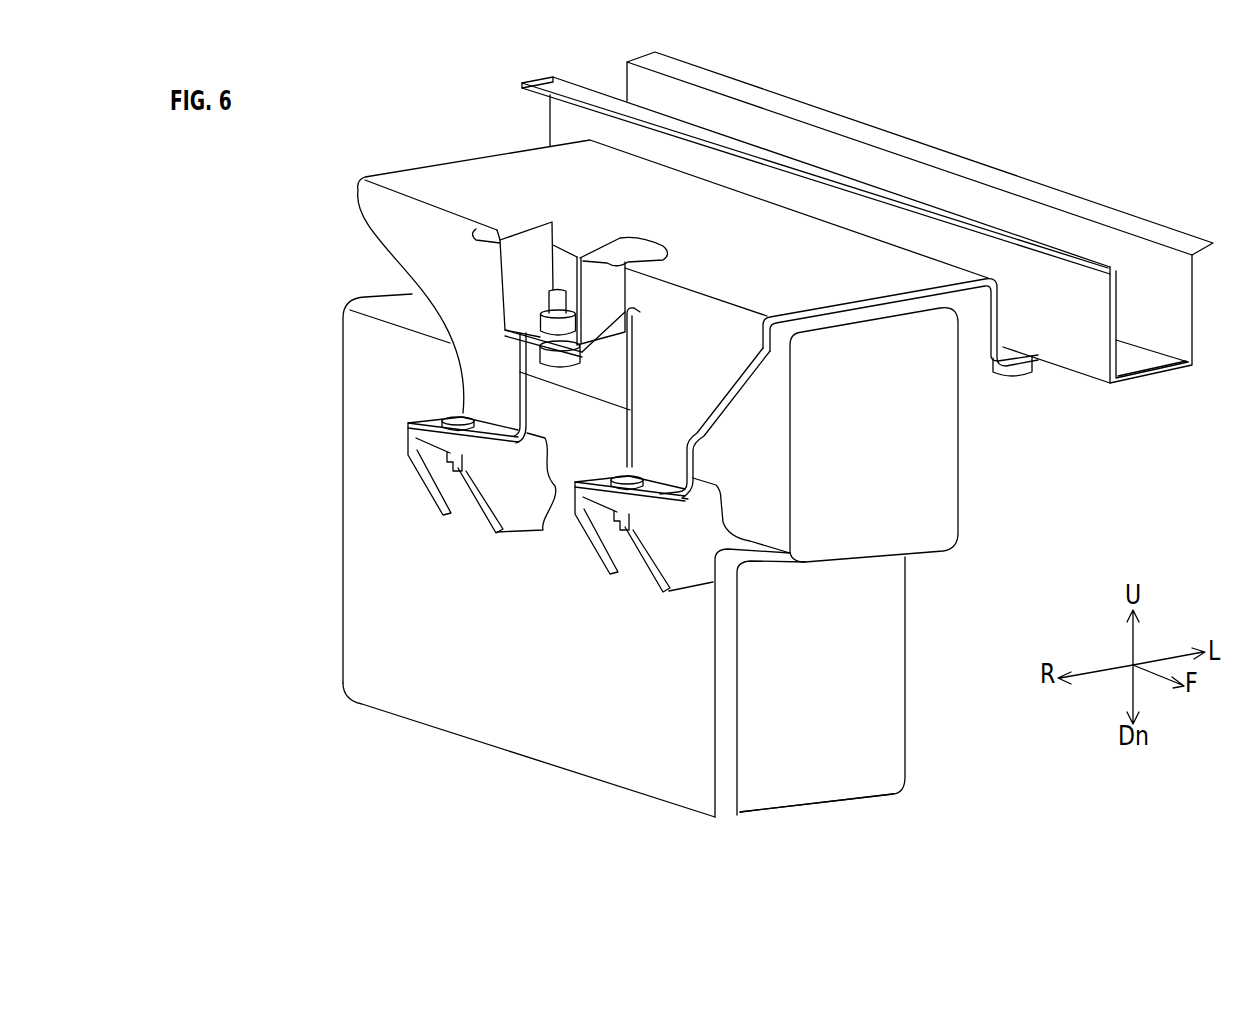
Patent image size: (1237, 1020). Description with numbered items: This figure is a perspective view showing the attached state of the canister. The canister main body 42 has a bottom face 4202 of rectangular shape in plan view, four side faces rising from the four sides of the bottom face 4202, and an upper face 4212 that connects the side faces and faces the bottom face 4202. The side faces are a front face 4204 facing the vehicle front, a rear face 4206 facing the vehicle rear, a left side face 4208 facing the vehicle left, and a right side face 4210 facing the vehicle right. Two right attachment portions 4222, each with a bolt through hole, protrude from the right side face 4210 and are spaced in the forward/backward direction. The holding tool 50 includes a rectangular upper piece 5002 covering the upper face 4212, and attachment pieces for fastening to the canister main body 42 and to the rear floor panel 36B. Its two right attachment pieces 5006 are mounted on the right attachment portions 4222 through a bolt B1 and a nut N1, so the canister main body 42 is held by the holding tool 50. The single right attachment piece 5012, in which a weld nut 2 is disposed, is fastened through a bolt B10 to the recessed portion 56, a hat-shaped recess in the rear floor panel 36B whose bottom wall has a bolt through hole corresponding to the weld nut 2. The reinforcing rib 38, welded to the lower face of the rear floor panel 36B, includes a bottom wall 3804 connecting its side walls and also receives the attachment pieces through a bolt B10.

The reinforcing rib 38 is at (1198, 323).
The bottom wall 3804 is at (1137, 362).
The upper piece 5002 is at (542, 177).
The holding tool 50 is at (746, 215).
The right attachment piece 5012 is at (486, 236).
The recessed portion 56 is at (527, 262).
The rear floor panel 36B is at (497, 228).
The weld nut 2 is at (563, 325).
The bolt B10 is at (570, 367).
The upper face 4212 is at (860, 312).
The right attachment piece 5006 is at (437, 420).
The bolt B1 is at (450, 420).
The right attachment portion 4222 is at (510, 539).
The nut N1 is at (447, 458).
The canister main body 42 is at (661, 559).
The rear face 4206 is at (343, 608).
The bottom face 4202 is at (503, 757).
The right side face 4210 is at (485, 698).
The left side face 4208 is at (907, 702).
The front face 4204 is at (877, 652).